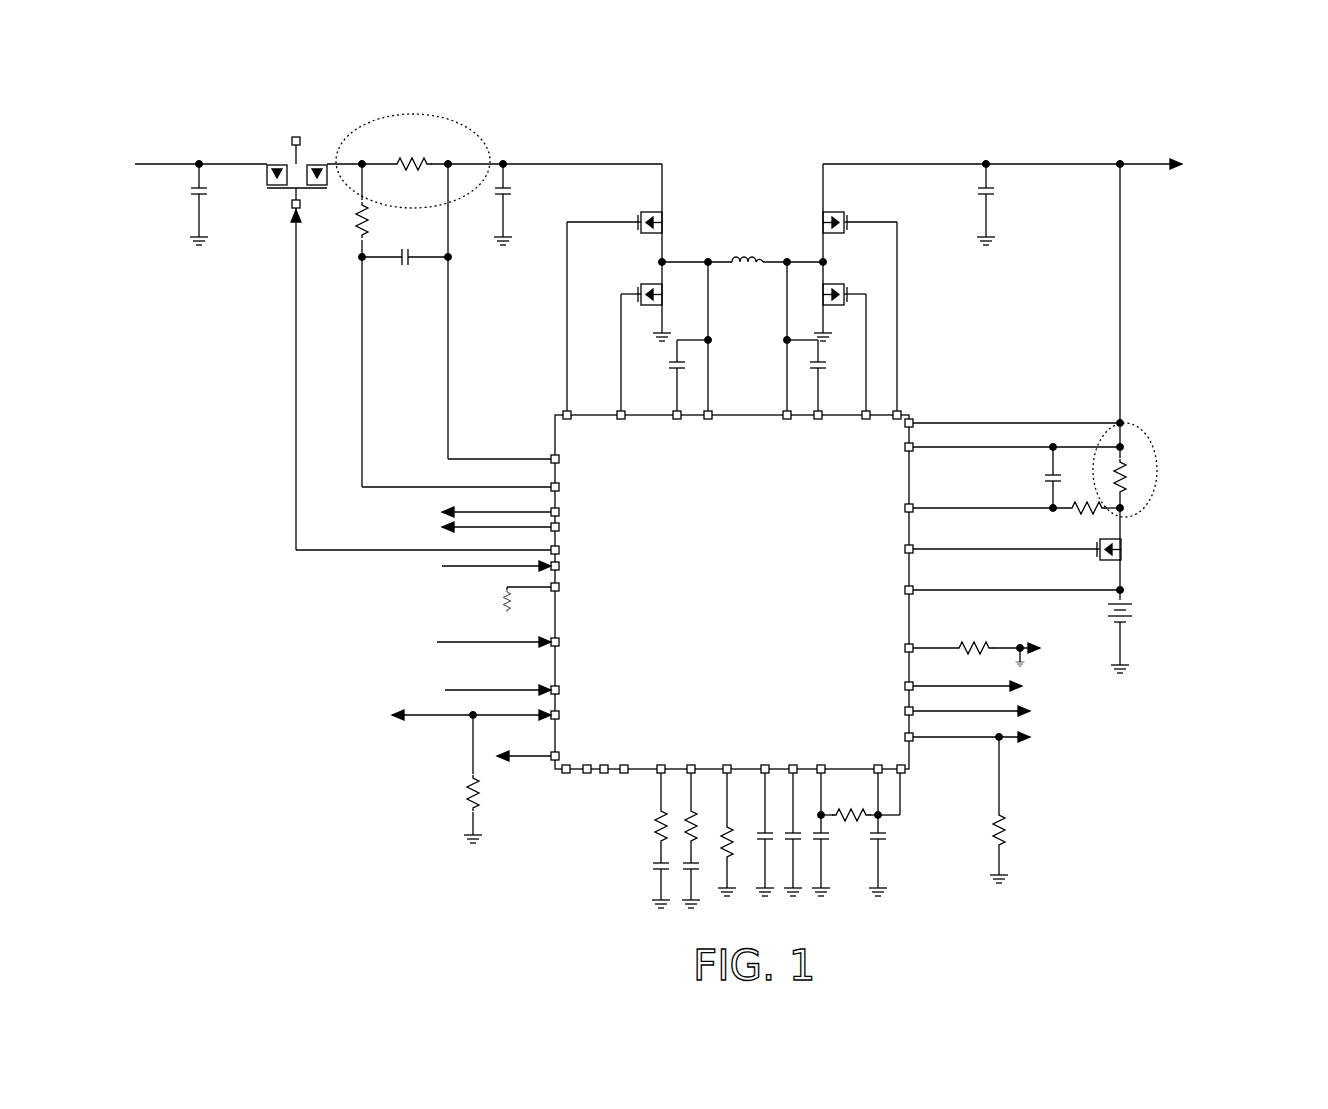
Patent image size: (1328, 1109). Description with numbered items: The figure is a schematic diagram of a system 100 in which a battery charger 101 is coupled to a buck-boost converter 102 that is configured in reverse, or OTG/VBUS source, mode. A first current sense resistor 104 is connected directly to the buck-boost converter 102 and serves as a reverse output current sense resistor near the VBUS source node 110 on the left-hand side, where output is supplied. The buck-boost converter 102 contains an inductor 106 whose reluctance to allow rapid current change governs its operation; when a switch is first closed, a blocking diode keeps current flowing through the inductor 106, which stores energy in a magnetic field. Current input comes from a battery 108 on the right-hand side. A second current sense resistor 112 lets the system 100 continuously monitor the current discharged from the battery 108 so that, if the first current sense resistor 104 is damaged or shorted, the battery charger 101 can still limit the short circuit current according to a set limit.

The system 100 is at (1212, 95).
The battery charger 101 is at (584, 427).
The buck-boost converter 102 is at (808, 318).
The first current sense resistor 104 is at (420, 137).
The inductor 106 is at (728, 245).
The battery 108 is at (1150, 585).
The VBUS source node 110 is at (176, 172).
The second current sense resistor 112 is at (1127, 453).